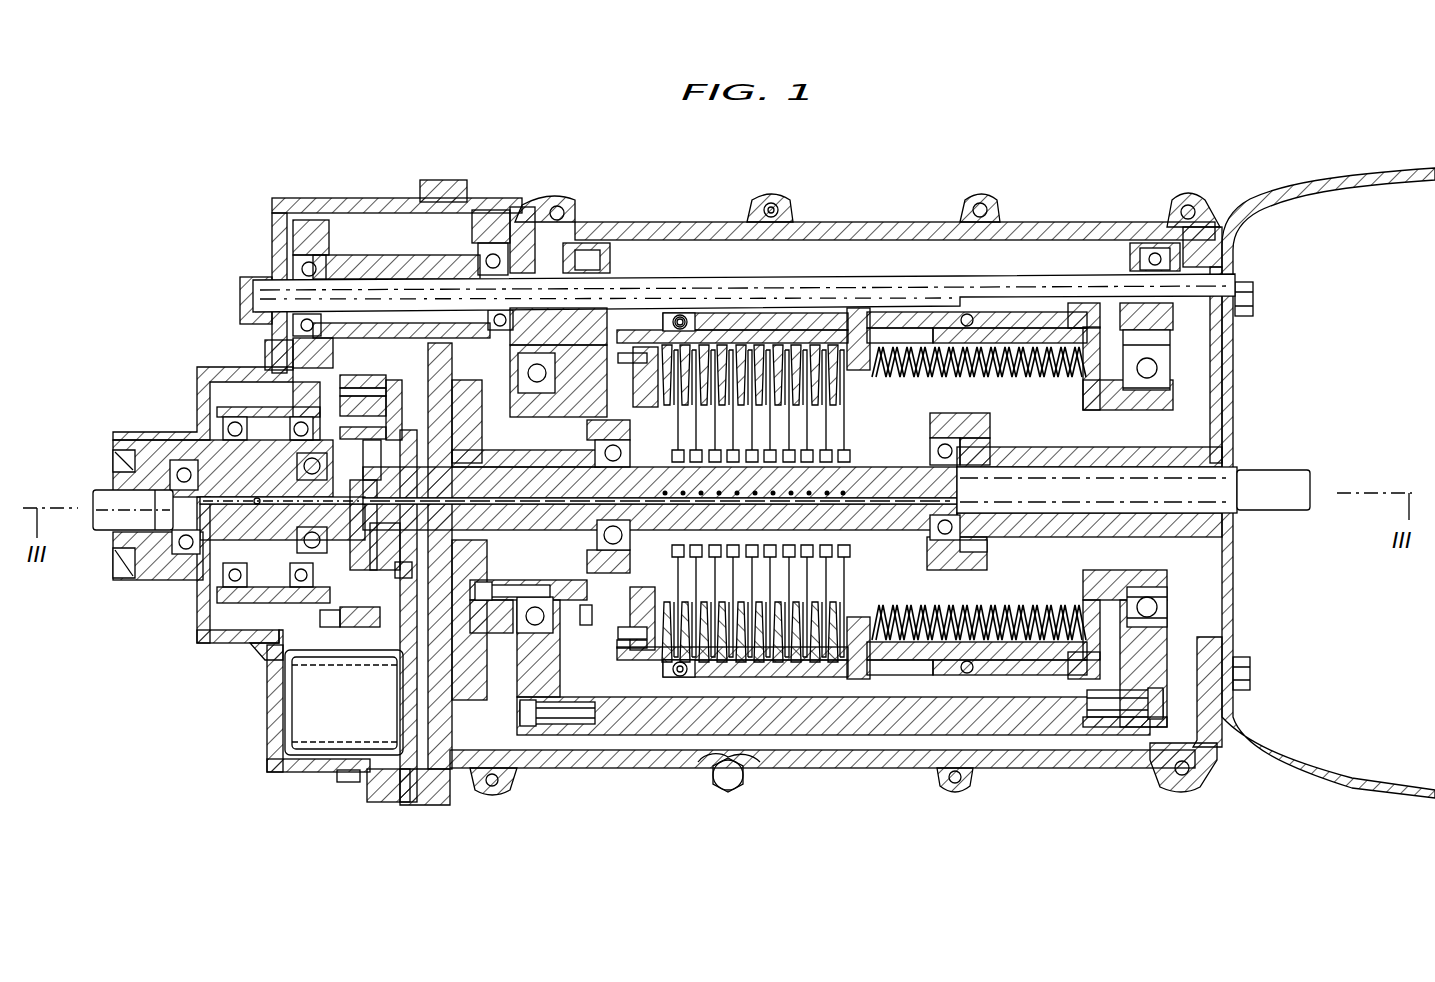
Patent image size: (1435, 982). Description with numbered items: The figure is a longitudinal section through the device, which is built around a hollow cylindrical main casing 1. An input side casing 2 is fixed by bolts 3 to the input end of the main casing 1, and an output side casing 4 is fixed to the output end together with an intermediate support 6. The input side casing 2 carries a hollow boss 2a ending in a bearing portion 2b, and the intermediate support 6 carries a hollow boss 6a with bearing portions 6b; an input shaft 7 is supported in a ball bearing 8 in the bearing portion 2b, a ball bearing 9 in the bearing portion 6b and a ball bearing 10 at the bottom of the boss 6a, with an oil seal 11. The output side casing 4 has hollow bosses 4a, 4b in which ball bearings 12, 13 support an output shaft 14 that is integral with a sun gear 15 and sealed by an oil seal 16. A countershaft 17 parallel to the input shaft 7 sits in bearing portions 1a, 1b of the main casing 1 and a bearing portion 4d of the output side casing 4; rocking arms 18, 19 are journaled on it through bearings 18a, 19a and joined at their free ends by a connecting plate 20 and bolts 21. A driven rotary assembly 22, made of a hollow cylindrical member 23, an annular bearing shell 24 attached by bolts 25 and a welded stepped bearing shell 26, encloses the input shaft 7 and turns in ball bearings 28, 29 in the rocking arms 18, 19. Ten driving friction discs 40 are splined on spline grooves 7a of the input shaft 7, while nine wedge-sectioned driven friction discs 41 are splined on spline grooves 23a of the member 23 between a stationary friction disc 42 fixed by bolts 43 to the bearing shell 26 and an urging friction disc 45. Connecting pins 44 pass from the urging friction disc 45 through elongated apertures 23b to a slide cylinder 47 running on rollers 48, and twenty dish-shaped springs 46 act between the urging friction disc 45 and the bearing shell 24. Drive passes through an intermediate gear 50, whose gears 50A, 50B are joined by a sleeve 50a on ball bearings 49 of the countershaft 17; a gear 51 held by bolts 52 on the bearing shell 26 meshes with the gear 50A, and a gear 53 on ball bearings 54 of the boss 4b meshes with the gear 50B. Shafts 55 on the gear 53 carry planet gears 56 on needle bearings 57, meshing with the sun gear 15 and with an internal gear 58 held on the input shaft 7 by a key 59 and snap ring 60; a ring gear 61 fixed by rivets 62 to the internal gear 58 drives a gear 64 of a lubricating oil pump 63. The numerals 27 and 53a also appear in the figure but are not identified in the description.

The main casing 1 is at (731, 222).
The bearing portion 1a is at (1215, 240).
The bearing portion 1b is at (570, 210).
The input side casing 2 is at (1233, 420).
The hollow boss 2a is at (1048, 537).
The bearing portion 2b is at (950, 572).
The bolts 3 is at (1256, 298).
The output side casing 4 is at (272, 215).
The hollow boss 4a is at (182, 437).
The hollow boss 4b is at (297, 445).
The bearing portion 4d is at (270, 277).
The intermediate support 6 is at (442, 180).
The hollow boss 6a is at (548, 458).
The bearing portions 6b is at (628, 425).
The input shaft 7 is at (1283, 513).
The spline grooves 7a is at (860, 465).
The ball bearing 8 is at (927, 540).
The ball bearing 9 is at (603, 548).
The ball bearing 10 is at (485, 582).
The oil seal 11 is at (993, 447).
The ball bearing 12 is at (175, 580).
The ball bearing 13 is at (272, 585).
The output shaft 14 is at (110, 530).
The sun gear 15 is at (277, 653).
The oil seal 16 is at (118, 458).
The countershaft 17 is at (873, 276).
The rocking arm 18 is at (1155, 243).
The bearing 18a is at (1143, 246).
The rocking arm 19 is at (612, 250).
The bearing 19a is at (587, 247).
The connecting plate 20 is at (1007, 724).
The bolts 21 is at (564, 724).
The driven rotary assembly 22 is at (1010, 317).
The hollow cylindrical member 23 is at (1028, 323).
The spline grooves 23a is at (803, 662).
The elongated apertures 23b is at (912, 330).
The annular bearing shell 24 is at (1090, 400).
The bolts 25 is at (1085, 303).
The stepped cylindrical bearing shell 26 is at (583, 617).
The retaining ring 27 is at (636, 308).
The ball bearing 28 is at (1170, 370).
The ball bearing 29 is at (557, 367).
The driving friction discs 40 is at (846, 420).
The driven friction discs 41 is at (835, 662).
The stationary friction disc 42 is at (632, 592).
The bolts 43 is at (612, 640).
The connecting pins 44 is at (862, 312).
The urging friction disc 45 is at (848, 588).
The dish-shaped springs 46 is at (1035, 640).
The slide cylinder 47 is at (752, 205).
The rollers 48 is at (683, 312).
The ball bearings 49 is at (293, 265).
The intermediate gear 50 is at (391, 262).
The gear 50A is at (488, 210).
The gear 50B is at (315, 220).
The sleeve 50a is at (415, 257).
The gear 51 is at (487, 633).
The bolts 52 is at (520, 585).
The gear 53 is at (272, 350).
The housing wall 53a is at (278, 640).
The ball bearings 54 is at (300, 425).
The shafts 55 is at (393, 382).
The planet gears 56 is at (370, 398).
The needle bearings 57 is at (343, 378).
The internal gear 58 is at (358, 628).
The key 59 is at (375, 625).
The snap ring 60 is at (362, 535).
The ring gear 61 is at (455, 385).
The rivets 62 is at (400, 578).
The oil pump 63 is at (305, 752).
The gear 64 is at (425, 797).